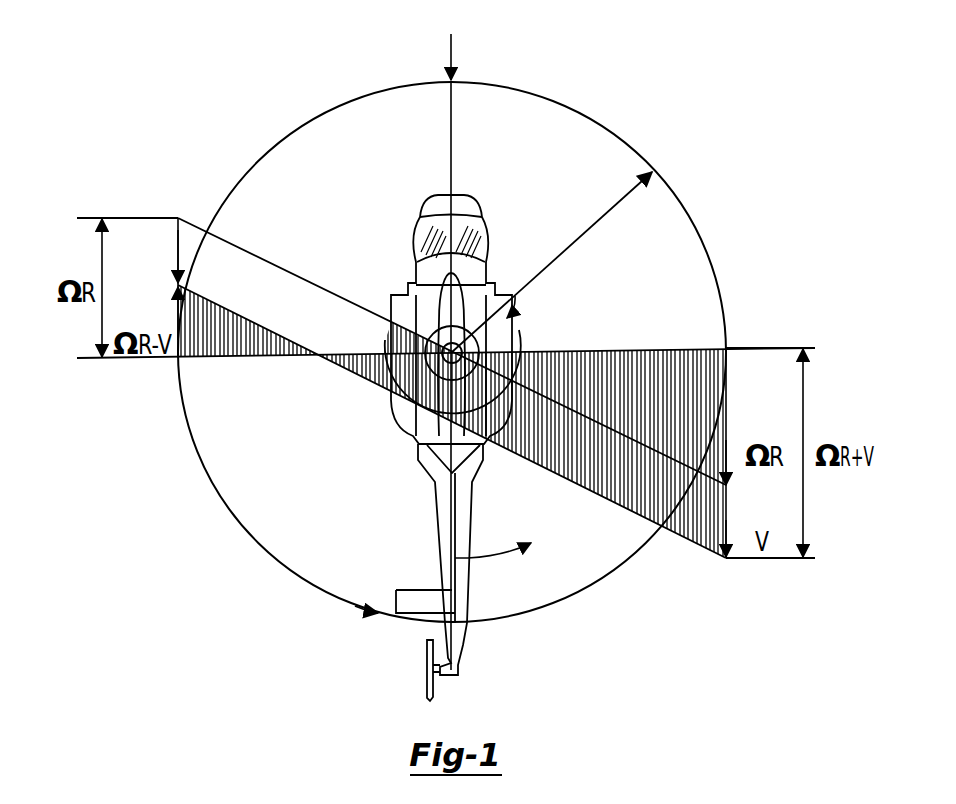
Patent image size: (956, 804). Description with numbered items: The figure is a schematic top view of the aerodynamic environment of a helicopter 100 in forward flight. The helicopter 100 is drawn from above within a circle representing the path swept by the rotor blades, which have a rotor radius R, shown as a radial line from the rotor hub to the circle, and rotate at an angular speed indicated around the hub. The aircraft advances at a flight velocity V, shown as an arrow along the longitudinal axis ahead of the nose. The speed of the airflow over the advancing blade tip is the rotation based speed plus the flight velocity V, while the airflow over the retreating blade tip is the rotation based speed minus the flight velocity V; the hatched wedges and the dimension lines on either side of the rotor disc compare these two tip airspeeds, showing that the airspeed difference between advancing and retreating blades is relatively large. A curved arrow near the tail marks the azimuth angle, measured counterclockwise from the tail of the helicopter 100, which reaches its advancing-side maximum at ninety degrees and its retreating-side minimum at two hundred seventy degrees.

The helicopter 100 is at (482, 178).
The flight velocity V is at (449, 44).
The rotor radius R is at (552, 262).